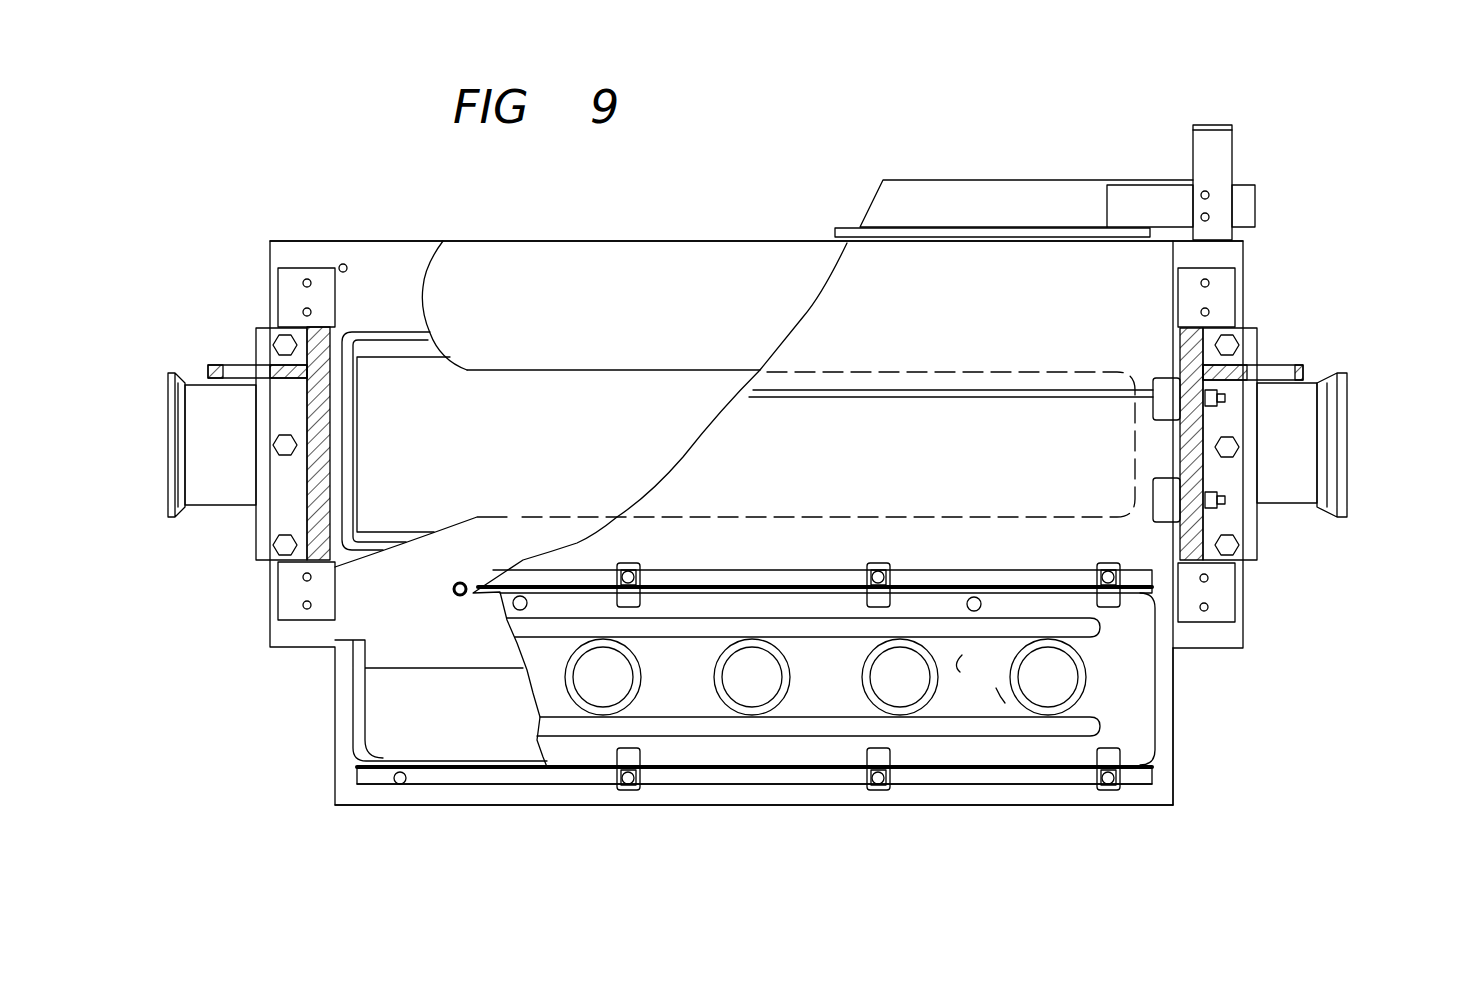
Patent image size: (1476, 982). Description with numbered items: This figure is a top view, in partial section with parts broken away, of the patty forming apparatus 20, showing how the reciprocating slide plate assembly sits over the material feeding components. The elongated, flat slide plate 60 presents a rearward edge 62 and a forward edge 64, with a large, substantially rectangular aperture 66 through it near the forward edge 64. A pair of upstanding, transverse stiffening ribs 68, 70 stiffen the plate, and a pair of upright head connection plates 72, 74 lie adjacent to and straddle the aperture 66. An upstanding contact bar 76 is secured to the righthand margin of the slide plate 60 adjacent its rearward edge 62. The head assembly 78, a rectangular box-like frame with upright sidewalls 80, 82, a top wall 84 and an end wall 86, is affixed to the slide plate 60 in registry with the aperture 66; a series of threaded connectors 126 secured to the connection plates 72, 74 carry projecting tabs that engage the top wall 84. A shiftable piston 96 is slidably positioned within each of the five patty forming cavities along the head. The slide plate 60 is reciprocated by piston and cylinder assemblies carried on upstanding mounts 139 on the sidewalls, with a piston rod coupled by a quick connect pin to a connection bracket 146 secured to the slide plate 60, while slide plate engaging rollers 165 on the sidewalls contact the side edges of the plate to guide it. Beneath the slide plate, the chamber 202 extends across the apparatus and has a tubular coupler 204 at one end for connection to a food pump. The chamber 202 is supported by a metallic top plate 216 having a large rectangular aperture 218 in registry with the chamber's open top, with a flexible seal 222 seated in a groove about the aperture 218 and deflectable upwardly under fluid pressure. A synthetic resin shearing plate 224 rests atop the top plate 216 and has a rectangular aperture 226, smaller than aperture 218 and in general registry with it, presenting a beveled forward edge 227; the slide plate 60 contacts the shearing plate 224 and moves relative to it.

The patty forming apparatus 20 is at (1333, 228).
The slide plate 60 is at (1100, 280).
The rearward edge 62 is at (897, 180).
The forward edge 64 is at (450, 807).
The aperture 66 is at (420, 762).
The stiffening rib 68 is at (830, 397).
The stiffening rib 70 is at (970, 230).
The head connection plate 72 is at (827, 577).
The head connection plate 74 is at (840, 780).
The contact bar 76 is at (1210, 150).
The head assembly 78 is at (1140, 748).
The sidewall 80 is at (927, 583).
The sidewall 82 is at (923, 773).
The top wall 84 is at (980, 679).
The end wall 86 is at (1155, 630).
The piston 96 is at (560, 668).
The threaded connector 126 is at (643, 590).
The mount 139 is at (240, 372).
The connection bracket 146 is at (1143, 203).
The slide plate engaging roller 165 is at (1163, 480).
The chamber 202 is at (590, 427).
The tubular coupler 204 is at (180, 510).
The top plate 216 is at (393, 240).
The aperture 218 is at (380, 360).
The flexible seal 222 is at (382, 330).
The shearing plate 224 is at (743, 283).
The aperture 226 is at (697, 372).
The beveled forward edge 227 is at (500, 518).